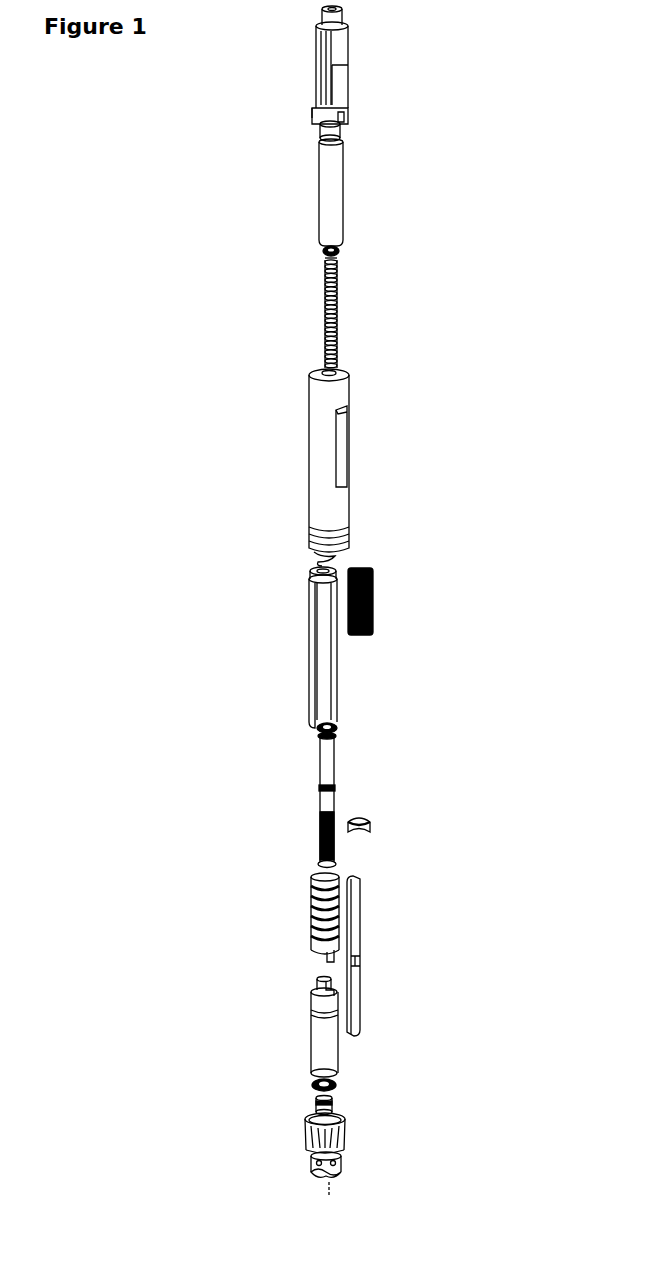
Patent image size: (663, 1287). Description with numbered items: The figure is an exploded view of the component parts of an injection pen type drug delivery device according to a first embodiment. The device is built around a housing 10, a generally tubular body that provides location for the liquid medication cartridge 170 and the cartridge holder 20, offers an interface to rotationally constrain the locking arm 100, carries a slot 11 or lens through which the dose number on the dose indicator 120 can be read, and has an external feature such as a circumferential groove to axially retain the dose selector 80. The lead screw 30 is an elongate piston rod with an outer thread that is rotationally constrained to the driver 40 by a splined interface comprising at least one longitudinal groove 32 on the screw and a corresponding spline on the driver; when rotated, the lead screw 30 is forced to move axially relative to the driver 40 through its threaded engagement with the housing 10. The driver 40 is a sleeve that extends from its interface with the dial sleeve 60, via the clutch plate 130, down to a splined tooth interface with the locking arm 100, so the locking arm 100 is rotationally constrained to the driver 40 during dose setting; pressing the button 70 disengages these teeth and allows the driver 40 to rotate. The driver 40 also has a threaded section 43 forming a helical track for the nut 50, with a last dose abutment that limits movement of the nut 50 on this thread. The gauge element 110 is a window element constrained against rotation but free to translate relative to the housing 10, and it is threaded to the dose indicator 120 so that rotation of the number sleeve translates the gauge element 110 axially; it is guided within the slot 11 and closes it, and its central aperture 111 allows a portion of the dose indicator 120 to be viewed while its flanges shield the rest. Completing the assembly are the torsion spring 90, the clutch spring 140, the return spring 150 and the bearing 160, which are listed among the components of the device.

The housing 10 is at (330, 483).
The slot 11 is at (346, 440).
The cartridge holder 20 is at (340, 37).
The lead screw 30 is at (323, 292).
The longitudinal groove 32 is at (321, 271).
The driver 40 is at (318, 843).
The threaded section 43 is at (311, 818).
The nut 50 is at (369, 818).
The dial sleeve 60 is at (322, 1040).
The button 70 is at (338, 1158).
The dose selector 80 is at (313, 1152).
The torsion spring 90 is at (375, 595).
The locking arm 100 is at (327, 707).
The gauge element 110 is at (362, 902).
The central aperture 111 is at (355, 960).
The dose indicator 120 is at (313, 938).
The clutch plate 130 is at (340, 1083).
The clutch spring 140 is at (333, 1110).
The return spring 150 is at (315, 568).
The bearing 160 is at (338, 258).
The cartridge 170 is at (342, 185).